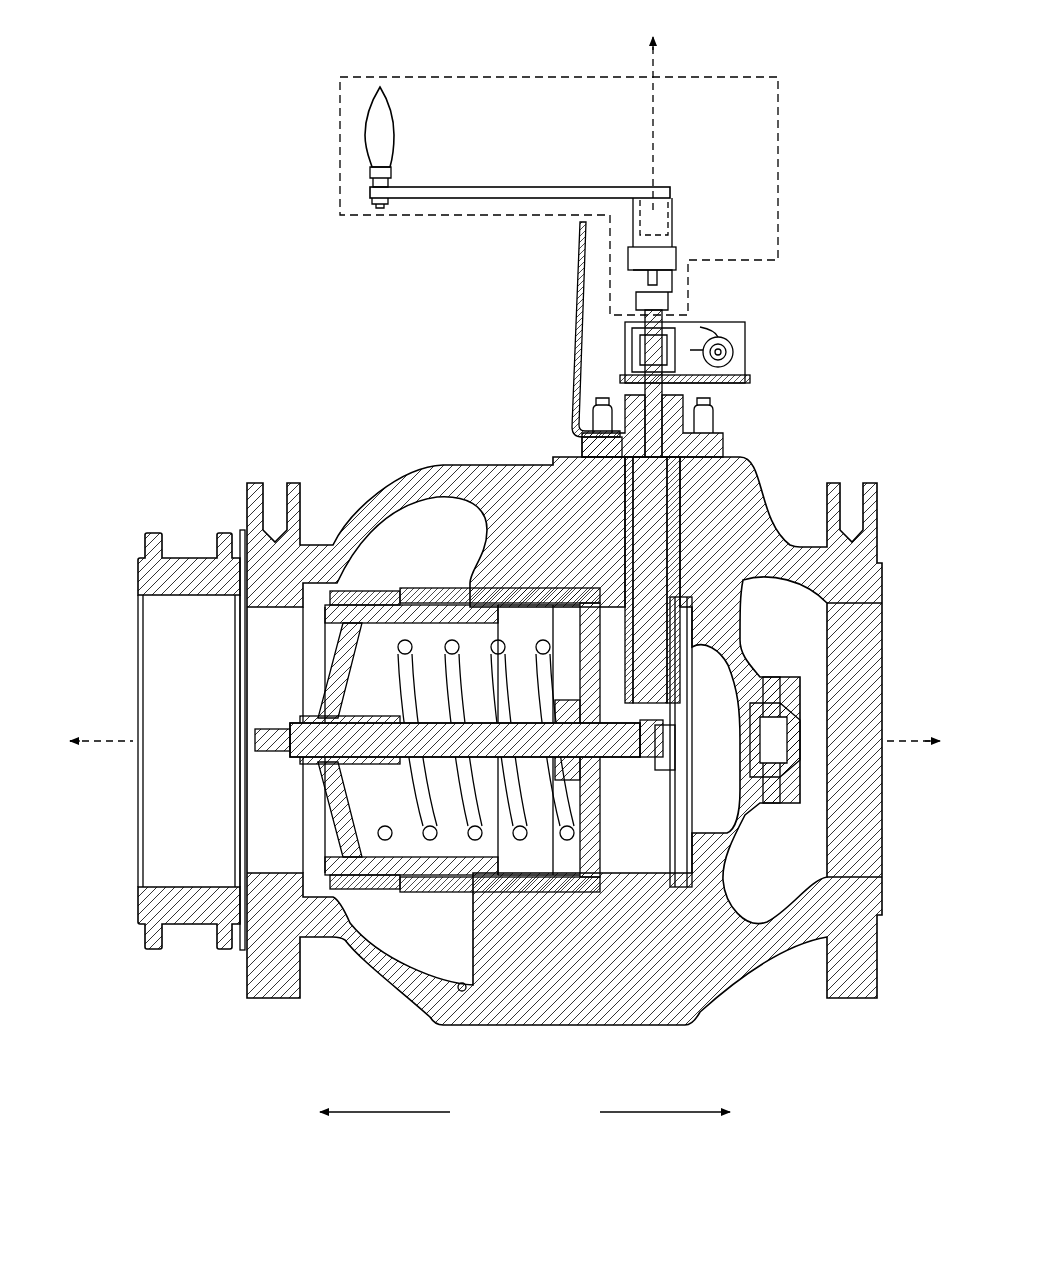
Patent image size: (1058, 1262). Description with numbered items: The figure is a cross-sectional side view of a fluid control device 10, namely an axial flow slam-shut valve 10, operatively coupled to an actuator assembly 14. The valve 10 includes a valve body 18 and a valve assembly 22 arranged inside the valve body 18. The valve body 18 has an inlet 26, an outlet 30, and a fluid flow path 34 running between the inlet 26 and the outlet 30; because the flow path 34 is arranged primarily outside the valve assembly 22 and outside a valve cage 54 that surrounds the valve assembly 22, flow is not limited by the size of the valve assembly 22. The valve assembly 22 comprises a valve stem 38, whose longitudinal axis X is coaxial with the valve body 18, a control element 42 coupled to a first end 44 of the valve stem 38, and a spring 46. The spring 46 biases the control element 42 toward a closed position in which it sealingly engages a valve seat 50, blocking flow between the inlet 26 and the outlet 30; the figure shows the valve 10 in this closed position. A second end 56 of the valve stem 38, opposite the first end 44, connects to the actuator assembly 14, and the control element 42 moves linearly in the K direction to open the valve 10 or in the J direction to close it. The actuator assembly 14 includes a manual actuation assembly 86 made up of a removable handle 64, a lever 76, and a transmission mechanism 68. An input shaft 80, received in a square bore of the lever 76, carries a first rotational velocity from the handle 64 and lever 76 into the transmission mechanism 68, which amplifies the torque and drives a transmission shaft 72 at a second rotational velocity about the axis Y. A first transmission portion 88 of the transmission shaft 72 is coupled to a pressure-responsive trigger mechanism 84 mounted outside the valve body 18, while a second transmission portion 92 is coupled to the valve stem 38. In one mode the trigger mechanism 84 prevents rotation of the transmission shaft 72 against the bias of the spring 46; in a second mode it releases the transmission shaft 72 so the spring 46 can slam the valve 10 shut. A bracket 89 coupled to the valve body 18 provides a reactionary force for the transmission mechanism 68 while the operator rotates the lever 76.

The fluid control device 10 is at (175, 72).
The actuator assembly 14 is at (860, 215).
The valve body 18 is at (725, 952).
The valve assembly 22 is at (395, 548).
The inlet 26 is at (155, 857).
The outlet 30 is at (877, 812).
The fluid flow path 34 is at (450, 552).
The valve stem 38 is at (542, 760).
The control element 42 is at (327, 627).
The first end 44 is at (253, 737).
The spring 46 is at (477, 840).
The valve seat 50 is at (313, 608).
The valve cage 54 is at (358, 882).
The second end 56 is at (612, 760).
The handle 64 is at (393, 112).
The transmission mechanism 68 is at (678, 258).
The transmission shaft 72 is at (720, 426).
The lever 76 is at (490, 187).
The input shaft 80 is at (676, 217).
The trigger mechanism 84 is at (740, 322).
The manual actuation assembly 86 is at (426, 70).
The first transmission portion 88 is at (700, 324).
The bracket 89 is at (573, 310).
The second transmission portion 92 is at (655, 638).